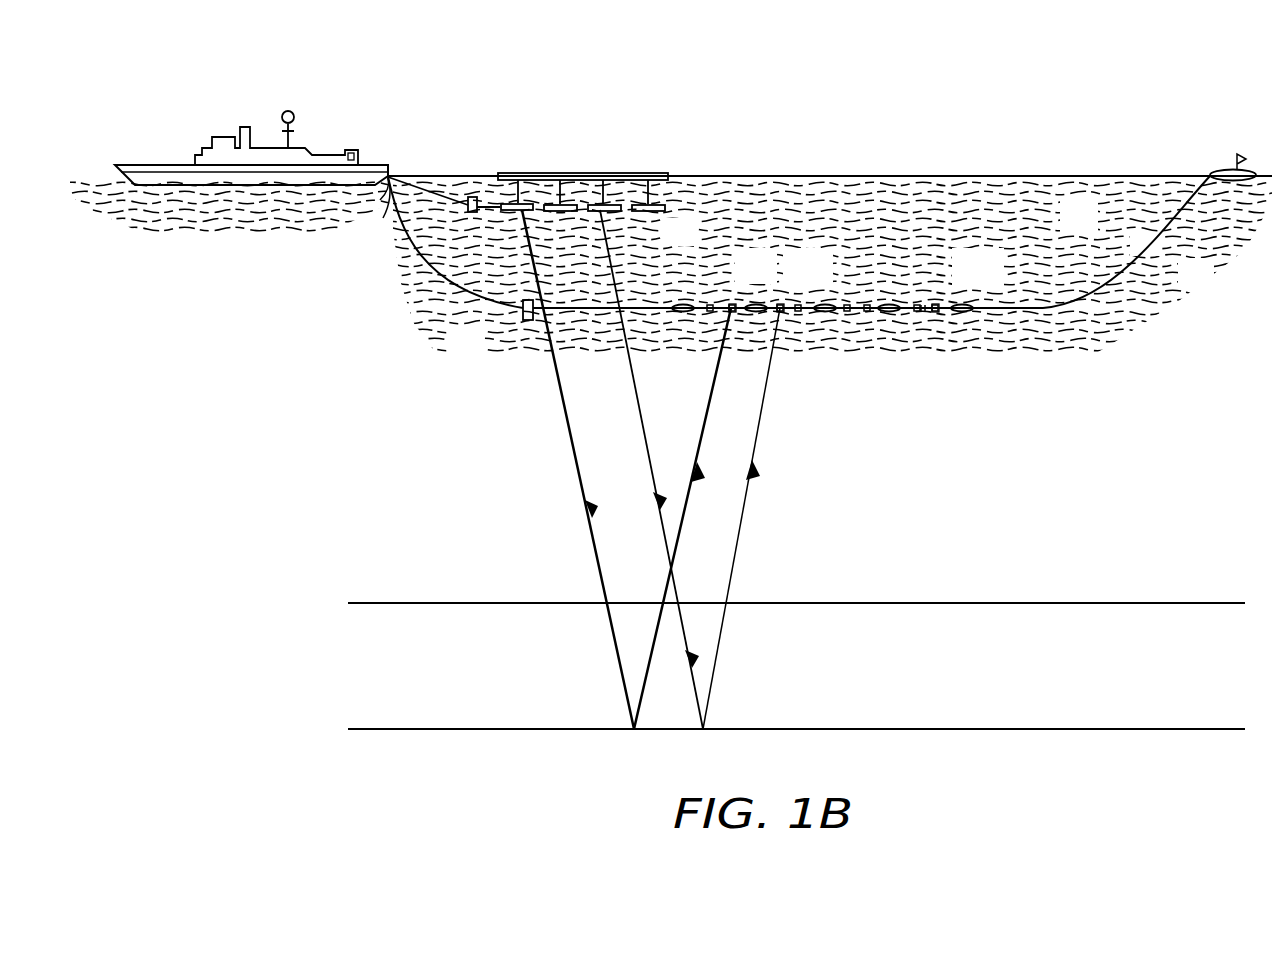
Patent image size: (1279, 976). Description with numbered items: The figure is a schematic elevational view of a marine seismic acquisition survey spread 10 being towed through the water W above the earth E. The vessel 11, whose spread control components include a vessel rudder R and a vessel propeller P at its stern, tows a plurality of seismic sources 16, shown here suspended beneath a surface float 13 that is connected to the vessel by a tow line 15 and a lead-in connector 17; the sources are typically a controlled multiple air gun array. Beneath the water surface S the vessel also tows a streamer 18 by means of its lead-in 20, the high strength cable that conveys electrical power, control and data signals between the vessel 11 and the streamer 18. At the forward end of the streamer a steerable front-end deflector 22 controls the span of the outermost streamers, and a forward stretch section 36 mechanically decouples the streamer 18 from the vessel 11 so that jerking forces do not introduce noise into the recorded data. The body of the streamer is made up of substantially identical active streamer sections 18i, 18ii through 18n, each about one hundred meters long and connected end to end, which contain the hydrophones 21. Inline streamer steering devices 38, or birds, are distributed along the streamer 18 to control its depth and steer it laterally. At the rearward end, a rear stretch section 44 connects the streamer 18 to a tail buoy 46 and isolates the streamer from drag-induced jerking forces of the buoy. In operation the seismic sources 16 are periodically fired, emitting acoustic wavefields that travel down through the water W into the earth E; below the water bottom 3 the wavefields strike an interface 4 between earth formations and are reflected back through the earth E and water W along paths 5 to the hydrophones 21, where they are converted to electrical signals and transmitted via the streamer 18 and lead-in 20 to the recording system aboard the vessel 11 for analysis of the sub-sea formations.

The seismic acquisition survey spread 10 is at (781, 36).
The vessel 11 is at (143, 165).
The source float 13 is at (590, 173).
The source tow cable 15 is at (423, 180).
The seismic sources 16 is at (615, 212).
The lead-in connector 17 is at (474, 196).
The streamer 18 is at (1000, 311).
The active streamer section 18i is at (732, 305).
The active streamer section 18ii is at (779, 305).
The active streamer section 18n is at (945, 305).
The lead-in 20 is at (424, 265).
The hydrophones 21 is at (709, 312).
The steerable front-end deflector 22 is at (521, 319).
The forward stretch section 36 is at (603, 311).
The streamer steering device 38 is at (756, 312).
The rear stretch section 44 is at (1146, 250).
The tail buoy 46 is at (1212, 172).
The water bottom 3 is at (491, 603).
The interface 4 is at (782, 729).
The paths 5 is at (690, 531).
The vessel propeller P is at (382, 193).
The vessel rudder R is at (383, 202).
The water surface S is at (690, 176).
The water W is at (1066, 227).
The earth E is at (975, 672).